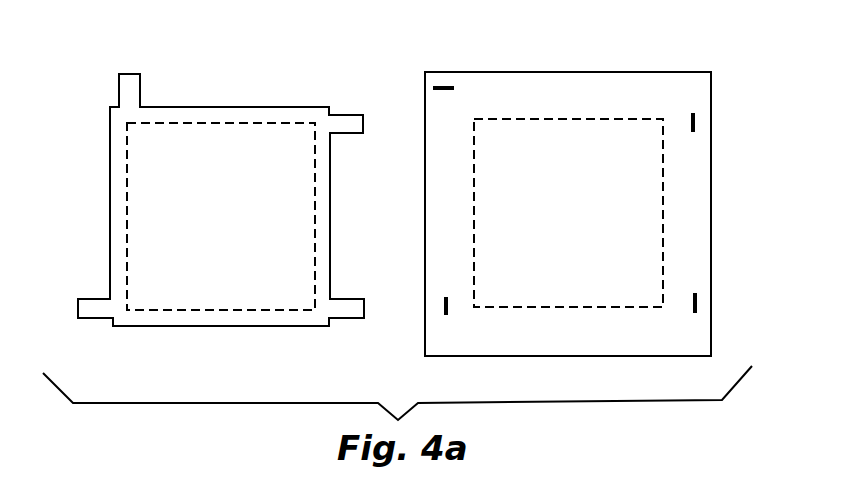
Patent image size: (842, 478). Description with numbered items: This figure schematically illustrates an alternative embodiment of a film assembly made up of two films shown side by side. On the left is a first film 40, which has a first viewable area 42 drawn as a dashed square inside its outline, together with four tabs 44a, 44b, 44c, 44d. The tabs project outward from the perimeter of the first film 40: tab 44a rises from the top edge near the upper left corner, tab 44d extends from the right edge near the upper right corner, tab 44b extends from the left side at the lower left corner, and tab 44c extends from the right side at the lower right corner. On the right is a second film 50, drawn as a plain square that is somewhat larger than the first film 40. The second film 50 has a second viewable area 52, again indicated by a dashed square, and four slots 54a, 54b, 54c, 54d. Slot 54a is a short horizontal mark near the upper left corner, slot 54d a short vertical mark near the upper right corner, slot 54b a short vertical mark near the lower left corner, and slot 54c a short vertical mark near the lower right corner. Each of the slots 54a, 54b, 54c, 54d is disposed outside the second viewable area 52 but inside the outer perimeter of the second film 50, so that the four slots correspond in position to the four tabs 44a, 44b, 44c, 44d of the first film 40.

The first film 40 is at (199, 68).
The first viewable area 42 is at (238, 314).
The tab 44a is at (118, 89).
The tab 44b is at (87, 320).
The tab 44c is at (353, 320).
The tab 44d is at (348, 114).
The second film 50 is at (537, 46).
The second viewable area 52 is at (541, 307).
The slot 54a is at (448, 86).
The slot 54b is at (443, 312).
The slot 54c is at (695, 313).
The slot 54d is at (690, 115).